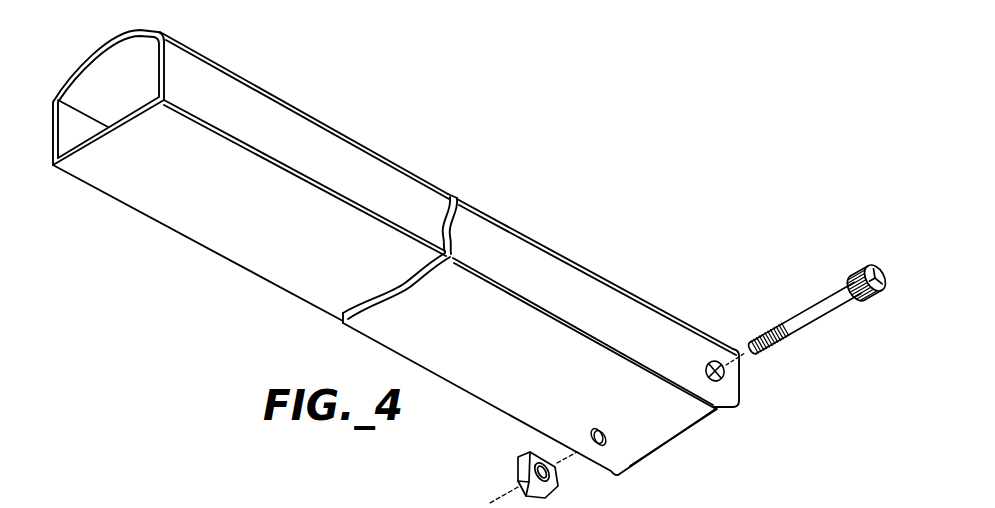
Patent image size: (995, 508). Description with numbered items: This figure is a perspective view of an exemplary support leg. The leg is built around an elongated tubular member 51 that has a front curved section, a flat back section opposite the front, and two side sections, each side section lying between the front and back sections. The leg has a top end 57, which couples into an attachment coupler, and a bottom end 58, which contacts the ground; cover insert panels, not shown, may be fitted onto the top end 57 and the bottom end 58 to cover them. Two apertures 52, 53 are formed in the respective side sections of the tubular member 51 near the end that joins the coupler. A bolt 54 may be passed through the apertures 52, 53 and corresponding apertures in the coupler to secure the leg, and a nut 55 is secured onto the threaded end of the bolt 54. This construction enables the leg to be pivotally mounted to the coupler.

The elongated tubular member 51 is at (512, 225).
The aperture 52 is at (714, 362).
The aperture 53 is at (607, 443).
The bolt 54 is at (827, 296).
The nut 55 is at (526, 455).
The top end 57 is at (741, 386).
The bottom end 58 is at (127, 29).